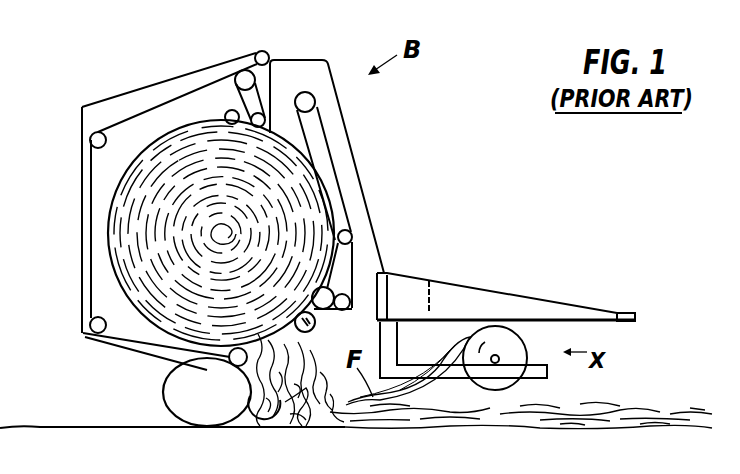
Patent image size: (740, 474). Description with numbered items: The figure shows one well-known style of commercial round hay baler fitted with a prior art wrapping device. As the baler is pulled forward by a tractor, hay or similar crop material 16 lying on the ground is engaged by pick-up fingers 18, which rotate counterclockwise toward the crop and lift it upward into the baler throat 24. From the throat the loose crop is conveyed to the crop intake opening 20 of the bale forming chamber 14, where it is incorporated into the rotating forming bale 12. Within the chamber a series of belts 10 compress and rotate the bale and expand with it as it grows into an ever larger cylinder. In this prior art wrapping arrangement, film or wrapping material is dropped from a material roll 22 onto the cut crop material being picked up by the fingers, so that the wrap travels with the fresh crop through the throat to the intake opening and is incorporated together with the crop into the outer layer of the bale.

The belts 10 is at (117, 193).
The forming bale 12 is at (280, 210).
The bale forming chamber 14 is at (299, 76).
The crop material 16 is at (637, 412).
The pick-up fingers 18 is at (277, 423).
The crop intake opening 20 is at (289, 349).
The material roll 22 is at (508, 345).
The baler throat 24 is at (305, 388).